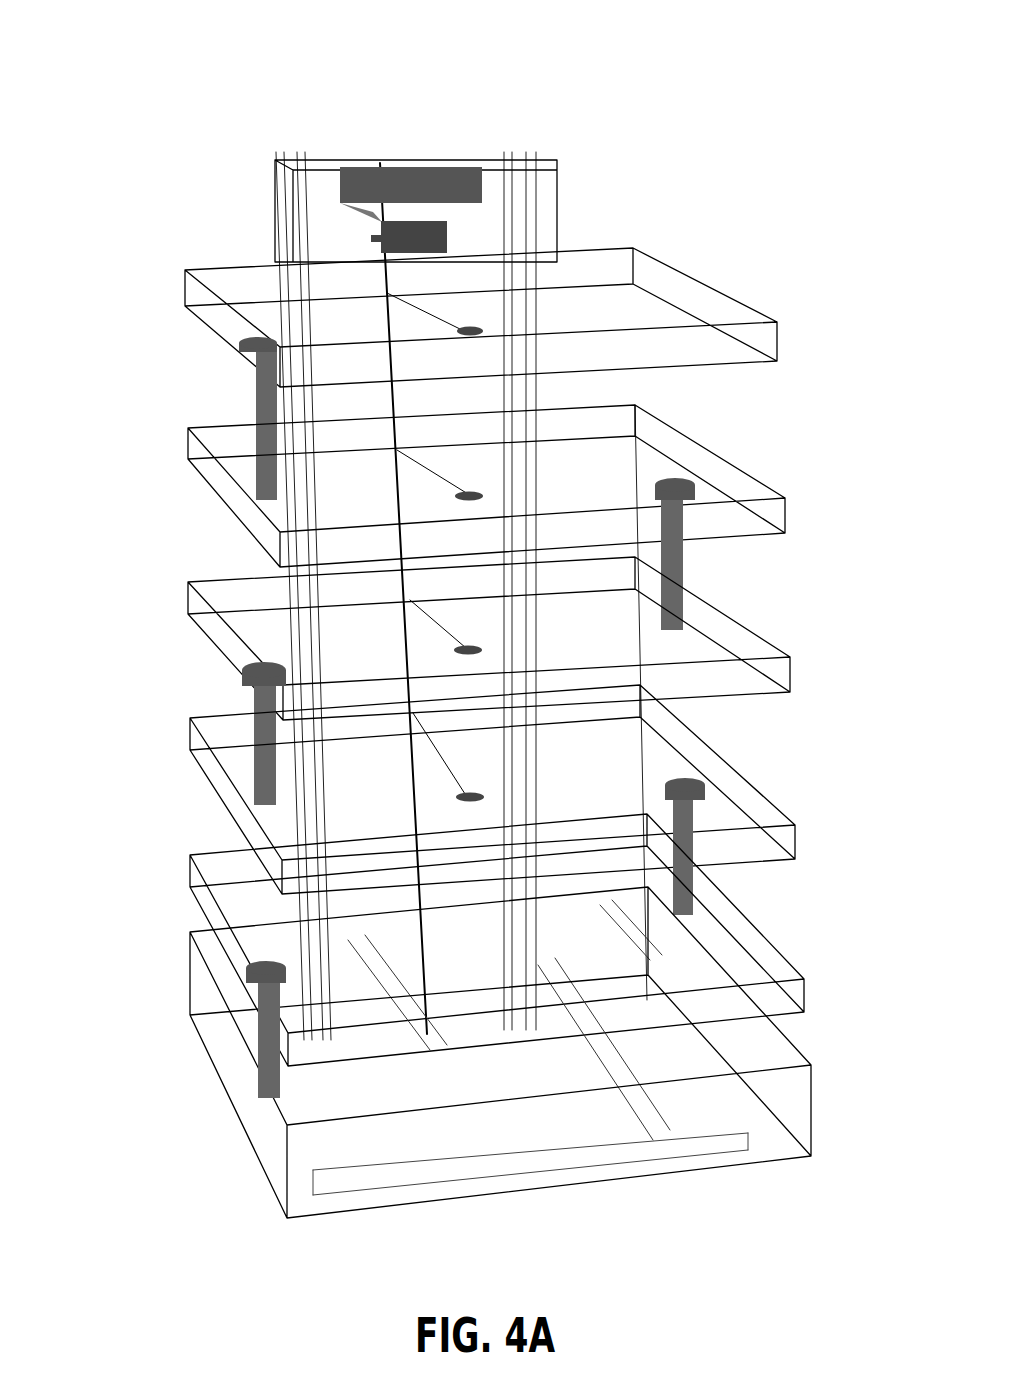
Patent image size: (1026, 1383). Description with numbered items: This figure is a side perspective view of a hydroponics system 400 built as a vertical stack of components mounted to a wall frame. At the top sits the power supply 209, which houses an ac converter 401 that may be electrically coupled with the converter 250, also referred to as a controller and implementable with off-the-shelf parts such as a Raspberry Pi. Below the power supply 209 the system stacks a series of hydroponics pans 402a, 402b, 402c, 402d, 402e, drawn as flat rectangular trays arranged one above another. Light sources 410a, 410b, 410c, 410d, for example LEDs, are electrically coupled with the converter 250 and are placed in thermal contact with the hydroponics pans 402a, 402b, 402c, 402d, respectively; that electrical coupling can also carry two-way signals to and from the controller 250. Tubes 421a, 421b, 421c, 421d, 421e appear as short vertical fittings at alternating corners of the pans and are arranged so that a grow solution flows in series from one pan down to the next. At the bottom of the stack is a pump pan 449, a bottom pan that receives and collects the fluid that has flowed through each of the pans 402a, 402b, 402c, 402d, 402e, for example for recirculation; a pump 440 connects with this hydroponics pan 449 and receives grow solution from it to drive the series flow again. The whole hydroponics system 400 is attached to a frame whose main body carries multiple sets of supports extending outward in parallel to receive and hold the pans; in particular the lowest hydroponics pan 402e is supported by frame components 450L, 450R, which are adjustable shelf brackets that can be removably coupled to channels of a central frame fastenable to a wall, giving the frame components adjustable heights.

The hydroponics system 400 is at (138, 96).
The power supply 209 is at (318, 176).
The ac converter 401 is at (387, 182).
The converter 250 is at (447, 234).
The hydroponics pan 402a is at (218, 313).
The hydroponics pan 402b is at (250, 500).
The hydroponics pan 402c is at (218, 630).
The hydroponics pan 402d is at (737, 767).
The hydroponics pan 402e is at (763, 935).
The light source 410a is at (470, 331).
The light source 410b is at (470, 492).
The light source 410c is at (470, 651).
The light source 410d is at (470, 797).
The tube 421a is at (258, 402).
The tube 421b is at (673, 570).
The tube 421c is at (263, 748).
The tube 421d is at (690, 892).
The tube 421e is at (266, 1033).
The pump 440 is at (633, 953).
The frame component 450L is at (359, 943).
The frame component 450R is at (578, 916).
The pump pan 449 is at (790, 1040).